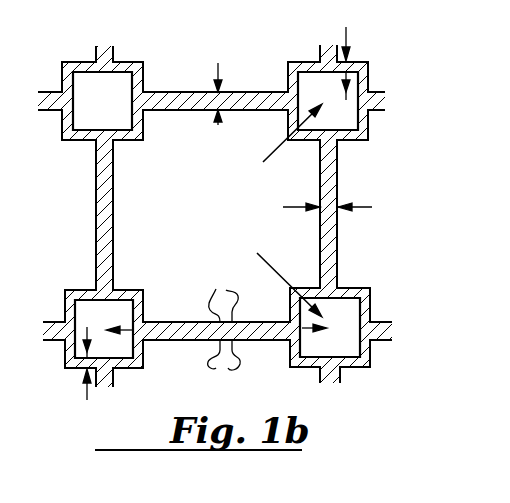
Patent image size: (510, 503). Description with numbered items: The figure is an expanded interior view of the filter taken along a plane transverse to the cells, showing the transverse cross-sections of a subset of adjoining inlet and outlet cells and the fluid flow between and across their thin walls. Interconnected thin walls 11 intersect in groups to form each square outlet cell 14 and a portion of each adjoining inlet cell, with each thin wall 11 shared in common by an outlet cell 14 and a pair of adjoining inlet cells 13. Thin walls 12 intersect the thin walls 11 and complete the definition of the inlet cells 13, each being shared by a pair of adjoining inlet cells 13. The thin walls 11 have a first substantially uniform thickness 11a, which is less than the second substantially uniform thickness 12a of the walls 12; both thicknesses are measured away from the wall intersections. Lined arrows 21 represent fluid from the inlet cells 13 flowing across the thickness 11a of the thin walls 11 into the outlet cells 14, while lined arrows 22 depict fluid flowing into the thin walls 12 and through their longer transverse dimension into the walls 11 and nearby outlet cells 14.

The thin walls 11 is at (78, 63).
The first substantially uniform thickness 11a is at (366, 69).
The thin walls 12 is at (167, 90).
The second substantially uniform thickness 12a is at (220, 140).
The inlet cells 13 is at (214, 35).
The outlet cells 14 is at (115, 115).
The lined arrows 21 is at (267, 156).
The lined arrows 22 is at (224, 328).